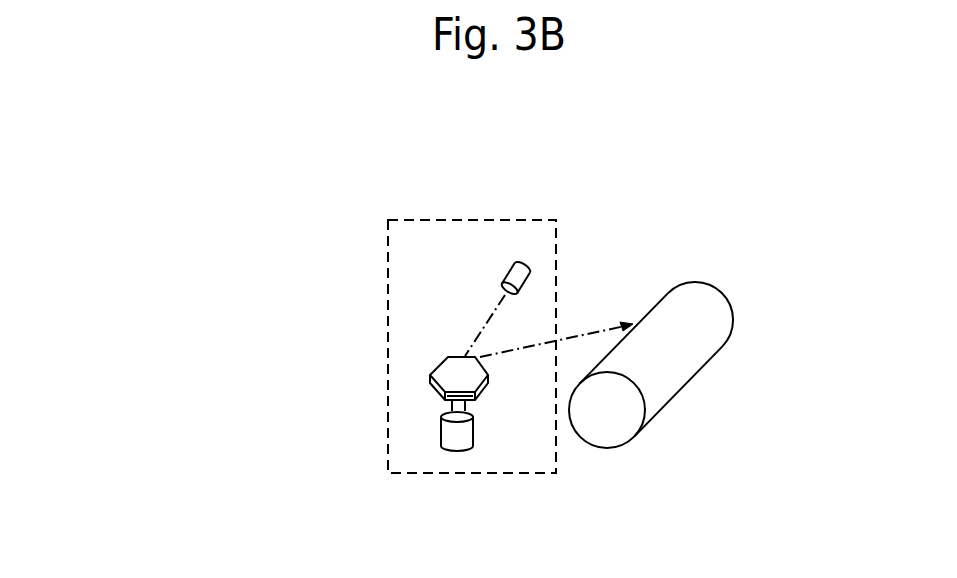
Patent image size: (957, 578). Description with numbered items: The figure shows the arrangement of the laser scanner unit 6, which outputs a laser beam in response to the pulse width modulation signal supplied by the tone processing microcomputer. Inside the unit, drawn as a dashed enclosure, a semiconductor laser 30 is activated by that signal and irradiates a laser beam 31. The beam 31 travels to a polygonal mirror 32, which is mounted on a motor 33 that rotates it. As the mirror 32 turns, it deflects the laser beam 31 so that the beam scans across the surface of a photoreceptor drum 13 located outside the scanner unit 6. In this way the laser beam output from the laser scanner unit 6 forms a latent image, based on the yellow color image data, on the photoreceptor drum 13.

The laser scanner unit 6 is at (389, 252).
The semiconductor laser 30 is at (530, 272).
The laser beam 31 is at (567, 336).
The polygonal mirror 32 is at (430, 388).
The motor 33 is at (457, 448).
The photoreceptor drum 13 is at (658, 398).